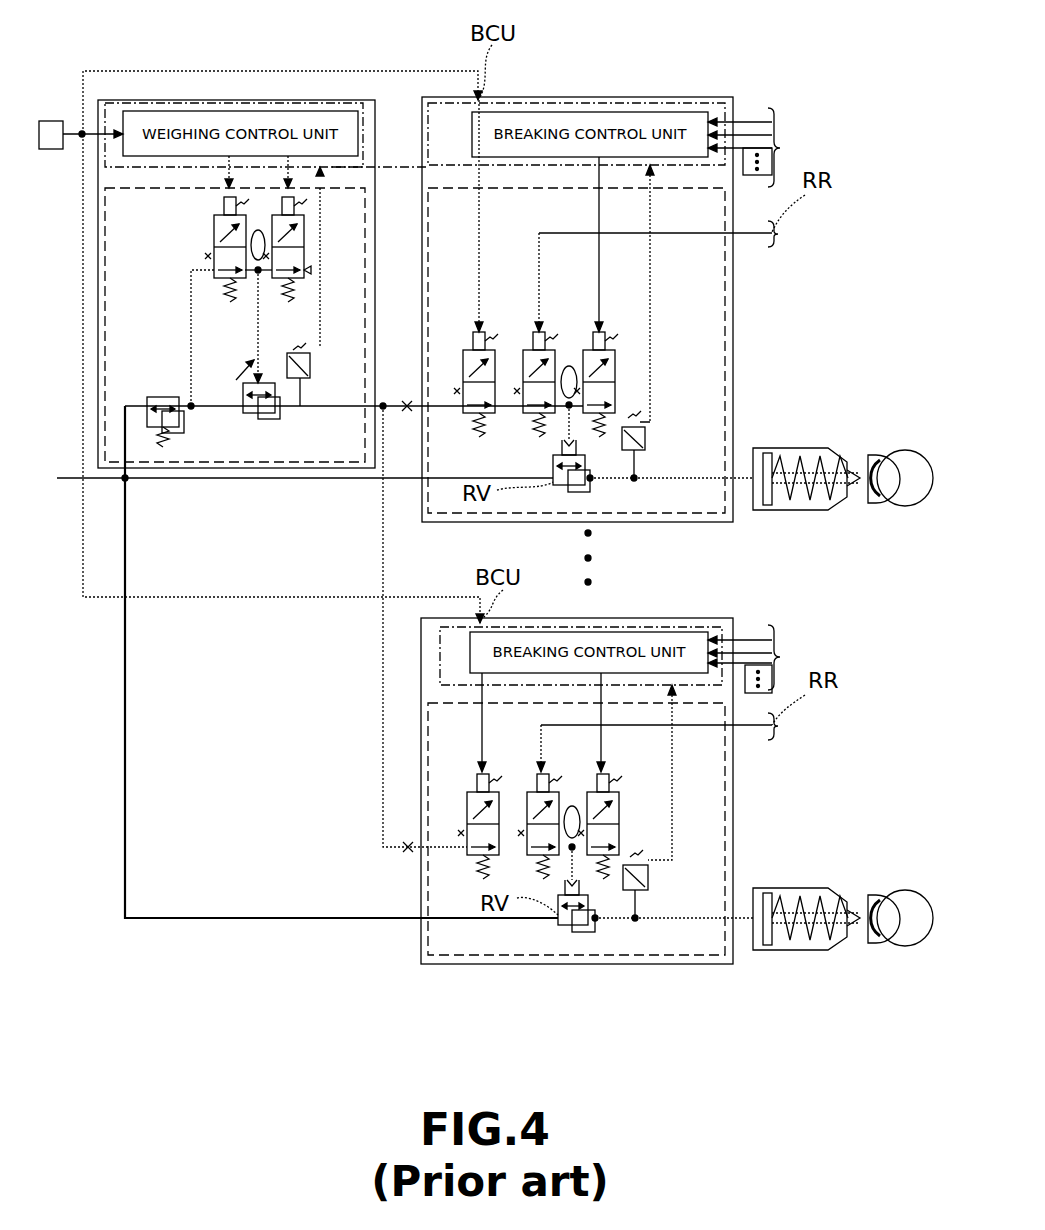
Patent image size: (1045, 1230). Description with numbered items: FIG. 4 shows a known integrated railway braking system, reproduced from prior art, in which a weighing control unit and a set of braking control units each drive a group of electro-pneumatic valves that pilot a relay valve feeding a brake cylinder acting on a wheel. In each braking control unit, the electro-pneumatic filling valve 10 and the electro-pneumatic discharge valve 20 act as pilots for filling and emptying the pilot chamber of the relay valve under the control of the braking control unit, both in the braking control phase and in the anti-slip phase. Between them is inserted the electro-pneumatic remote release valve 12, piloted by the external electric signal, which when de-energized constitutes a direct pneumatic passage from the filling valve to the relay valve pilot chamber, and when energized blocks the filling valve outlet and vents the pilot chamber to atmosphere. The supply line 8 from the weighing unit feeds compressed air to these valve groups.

The pneumatic supply connection / throttle 8 is at (407, 400).
The solenoid valve 10 is at (463, 348).
The solenoid valve 20 is at (523, 348).
The solenoid valve 12 is at (618, 348).